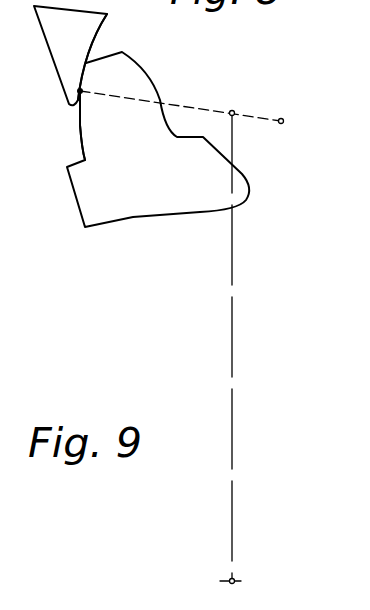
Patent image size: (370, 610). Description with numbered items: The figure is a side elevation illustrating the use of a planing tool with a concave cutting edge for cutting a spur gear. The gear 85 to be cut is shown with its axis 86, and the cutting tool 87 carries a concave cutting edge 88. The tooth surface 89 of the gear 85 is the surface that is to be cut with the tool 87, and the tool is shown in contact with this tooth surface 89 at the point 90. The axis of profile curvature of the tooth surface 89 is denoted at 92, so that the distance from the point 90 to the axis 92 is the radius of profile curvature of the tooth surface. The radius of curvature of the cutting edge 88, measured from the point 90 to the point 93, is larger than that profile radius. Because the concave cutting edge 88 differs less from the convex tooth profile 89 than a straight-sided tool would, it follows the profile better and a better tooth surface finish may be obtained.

The gear 85 is at (158, 207).
The axis 86 is at (235, 577).
The cutting tool 87 is at (60, 48).
The concave cutting edge 88 is at (97, 34).
The tooth surface 89 is at (75, 128).
The point of contact 90 is at (81, 93).
The axis of profile curvature 92 is at (237, 109).
The center of curvature of the cutting edge 93 is at (295, 103).